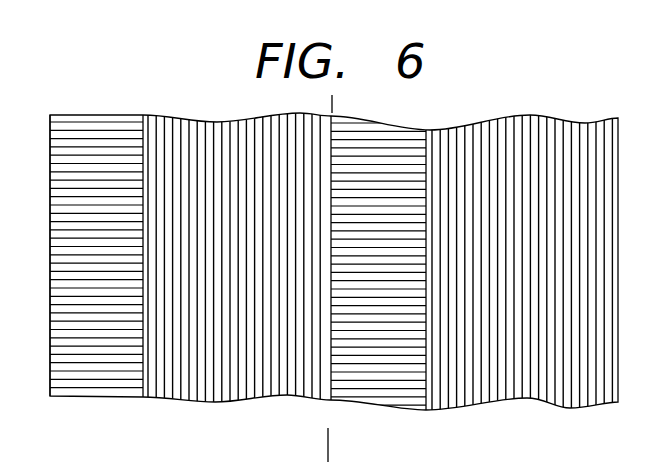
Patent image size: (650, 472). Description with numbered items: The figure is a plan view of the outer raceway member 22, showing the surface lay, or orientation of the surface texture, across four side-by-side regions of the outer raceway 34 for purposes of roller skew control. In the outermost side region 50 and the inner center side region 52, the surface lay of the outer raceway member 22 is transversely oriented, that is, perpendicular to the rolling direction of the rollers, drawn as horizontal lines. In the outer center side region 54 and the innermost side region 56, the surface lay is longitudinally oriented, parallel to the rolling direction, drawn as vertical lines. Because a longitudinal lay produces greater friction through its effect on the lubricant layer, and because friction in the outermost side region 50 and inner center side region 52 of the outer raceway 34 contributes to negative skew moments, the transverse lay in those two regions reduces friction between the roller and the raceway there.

The outer raceway member 22 is at (617, 378).
The outer raceway 34 is at (70, 357).
The outermost side region 50 is at (106, 122).
The inner center side region 52 is at (362, 130).
The outer center side region 54 is at (245, 130).
The innermost side region 56 is at (508, 132).